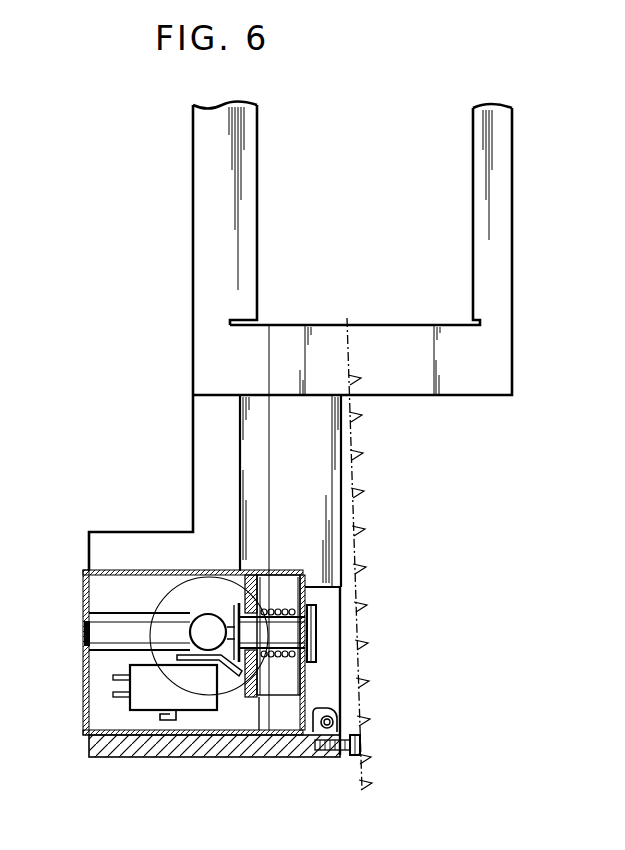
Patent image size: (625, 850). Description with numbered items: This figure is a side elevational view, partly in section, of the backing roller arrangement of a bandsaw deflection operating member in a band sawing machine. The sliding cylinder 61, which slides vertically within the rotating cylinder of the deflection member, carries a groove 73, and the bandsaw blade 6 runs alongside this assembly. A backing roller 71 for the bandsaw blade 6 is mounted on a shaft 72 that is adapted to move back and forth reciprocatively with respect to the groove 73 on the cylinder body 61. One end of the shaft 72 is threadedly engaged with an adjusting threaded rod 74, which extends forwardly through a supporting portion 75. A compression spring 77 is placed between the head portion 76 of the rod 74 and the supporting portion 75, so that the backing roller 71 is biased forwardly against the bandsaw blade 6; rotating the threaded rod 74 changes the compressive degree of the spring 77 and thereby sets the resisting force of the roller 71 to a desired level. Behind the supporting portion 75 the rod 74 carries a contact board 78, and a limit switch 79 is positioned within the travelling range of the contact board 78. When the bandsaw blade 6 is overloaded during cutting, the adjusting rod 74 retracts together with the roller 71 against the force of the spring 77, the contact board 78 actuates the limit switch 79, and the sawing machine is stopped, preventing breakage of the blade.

The bandsaw blade 6 is at (325, 463).
The sliding cylinder 61 is at (198, 225).
The backing roller 71 is at (150, 655).
The shaft 72 is at (207, 638).
The groove 73 is at (115, 612).
The adjusting threaded rod 74 is at (173, 630).
The supporting portion 75 is at (243, 690).
The head portion 76 is at (307, 625).
The compression spring 77 is at (307, 667).
The contact board 78 is at (238, 672).
The limit switch 79 is at (174, 703).